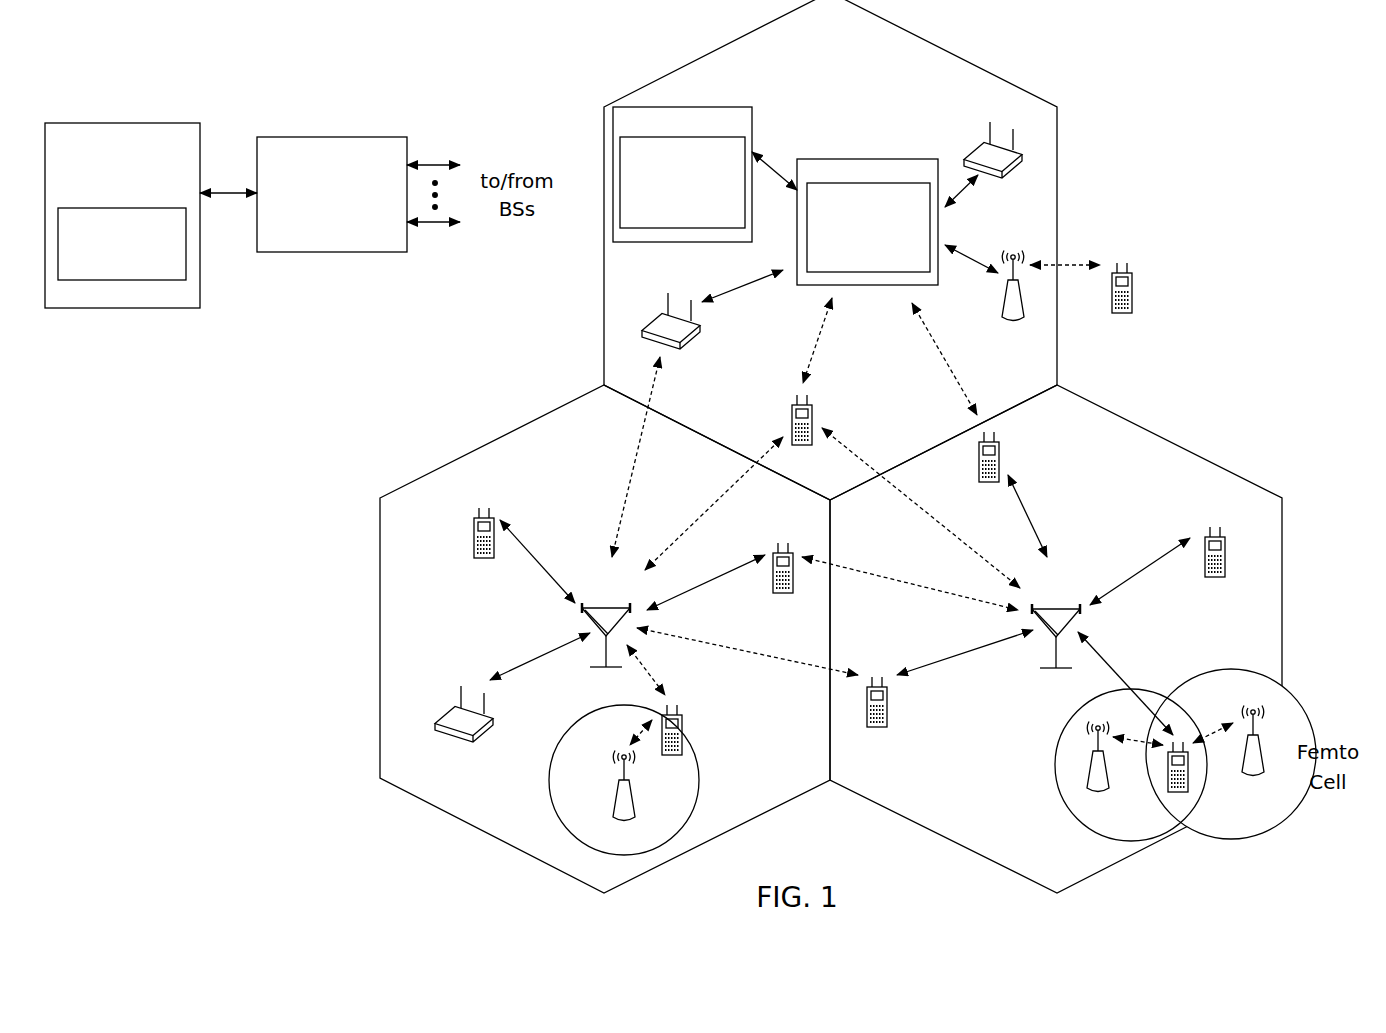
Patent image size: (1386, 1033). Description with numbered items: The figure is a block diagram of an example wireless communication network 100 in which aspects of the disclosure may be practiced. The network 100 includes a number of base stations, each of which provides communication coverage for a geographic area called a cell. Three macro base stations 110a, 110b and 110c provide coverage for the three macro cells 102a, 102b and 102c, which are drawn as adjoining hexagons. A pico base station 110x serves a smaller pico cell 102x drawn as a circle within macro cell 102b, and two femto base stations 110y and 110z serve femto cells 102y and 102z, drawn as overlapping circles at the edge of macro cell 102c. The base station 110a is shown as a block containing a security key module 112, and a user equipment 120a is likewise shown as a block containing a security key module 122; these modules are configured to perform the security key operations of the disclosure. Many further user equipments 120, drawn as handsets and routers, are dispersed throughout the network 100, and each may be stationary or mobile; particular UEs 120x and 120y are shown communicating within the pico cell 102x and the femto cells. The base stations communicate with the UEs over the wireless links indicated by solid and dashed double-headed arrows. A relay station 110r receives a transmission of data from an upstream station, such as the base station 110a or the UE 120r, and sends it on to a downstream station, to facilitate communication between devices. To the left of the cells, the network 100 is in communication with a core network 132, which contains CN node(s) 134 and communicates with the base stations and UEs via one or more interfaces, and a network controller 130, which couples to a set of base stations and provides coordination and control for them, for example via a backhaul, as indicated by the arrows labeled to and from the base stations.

The wireless communication network 100 is at (1214, 62).
The macro cell 102a is at (957, 36).
The macro cell 102b is at (492, 442).
The macro cell 102c is at (1182, 427).
The pico cell 102x is at (572, 727).
The femto cell 102y is at (1065, 727).
The femto cell 102z is at (1245, 652).
The base station 110a is at (892, 158).
The base station 110b is at (612, 592).
The base station 110c is at (1066, 593).
The relay station 110r is at (1005, 306).
The pico base station 110x is at (636, 808).
The femto base station 110y is at (1110, 775).
The femto base station 110z is at (1264, 760).
The security key module 112 is at (813, 208).
The user equipment 120 is at (657, 318).
The user equipment 120a is at (741, 107).
The user equipment 120r is at (1131, 300).
The user equipment 120x is at (698, 712).
The user equipment 120y is at (1168, 782).
The security key module 122 is at (733, 161).
The network controller 130 is at (343, 122).
The core network 132 is at (136, 122).
The CN node(s) 134 is at (186, 229).